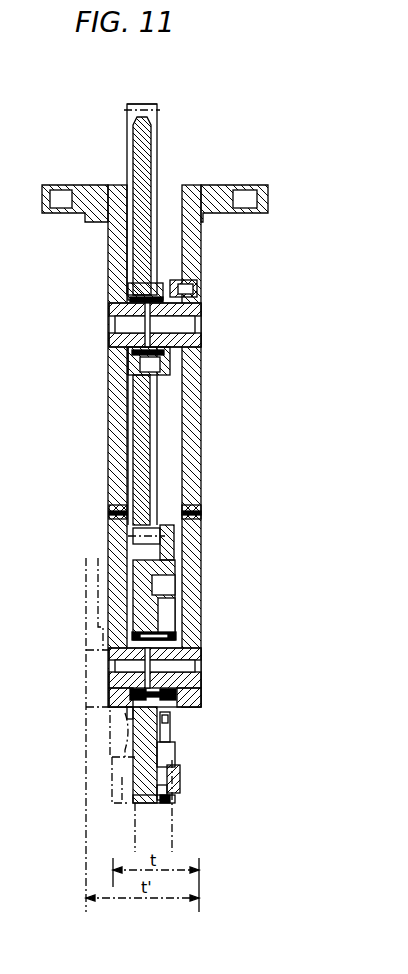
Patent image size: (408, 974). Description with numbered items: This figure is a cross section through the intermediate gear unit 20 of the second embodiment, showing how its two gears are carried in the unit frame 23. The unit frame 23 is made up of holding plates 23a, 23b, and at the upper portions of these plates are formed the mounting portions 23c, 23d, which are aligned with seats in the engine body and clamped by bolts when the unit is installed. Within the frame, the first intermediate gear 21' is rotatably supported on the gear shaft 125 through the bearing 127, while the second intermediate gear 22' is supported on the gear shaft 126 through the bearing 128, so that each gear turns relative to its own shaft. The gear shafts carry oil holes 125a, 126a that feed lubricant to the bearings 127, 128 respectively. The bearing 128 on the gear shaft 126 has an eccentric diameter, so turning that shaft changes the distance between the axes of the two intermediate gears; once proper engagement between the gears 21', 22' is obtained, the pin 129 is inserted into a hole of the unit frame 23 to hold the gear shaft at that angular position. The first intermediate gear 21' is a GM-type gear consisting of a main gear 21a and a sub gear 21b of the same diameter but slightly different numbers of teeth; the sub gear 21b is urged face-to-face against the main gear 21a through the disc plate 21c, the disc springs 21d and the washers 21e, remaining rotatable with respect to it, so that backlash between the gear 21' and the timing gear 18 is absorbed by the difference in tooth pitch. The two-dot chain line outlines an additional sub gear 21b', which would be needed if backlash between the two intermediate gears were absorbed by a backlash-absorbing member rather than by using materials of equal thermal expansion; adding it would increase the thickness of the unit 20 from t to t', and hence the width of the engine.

The intermediate gear unit 20 is at (180, 140).
The second intermediate gear 22' is at (163, 372).
The unit frame 23 is at (154, 425).
The holding plate 23a is at (110, 427).
The holding plate 23b is at (203, 437).
The mounting portion 23c is at (78, 183).
The mounting portion 23d is at (220, 183).
The pin 129 is at (195, 290).
The gear shaft 126 is at (187, 317).
The oil hole 126a is at (188, 325).
The bearing 128 is at (178, 354).
The bearing 127 is at (178, 638).
The gear shaft 125 is at (185, 673).
The oil hole 125a is at (190, 670).
The first intermediate gear 21' is at (126, 773).
The main gear 21a is at (170, 804).
The sub gear 21b is at (205, 794).
The sub gear 21b' is at (86, 735).
The disc plate 21c is at (180, 772).
The disc springs 21d is at (165, 742).
The washers 21e is at (168, 720).
The timing gear 18 is at (172, 843).